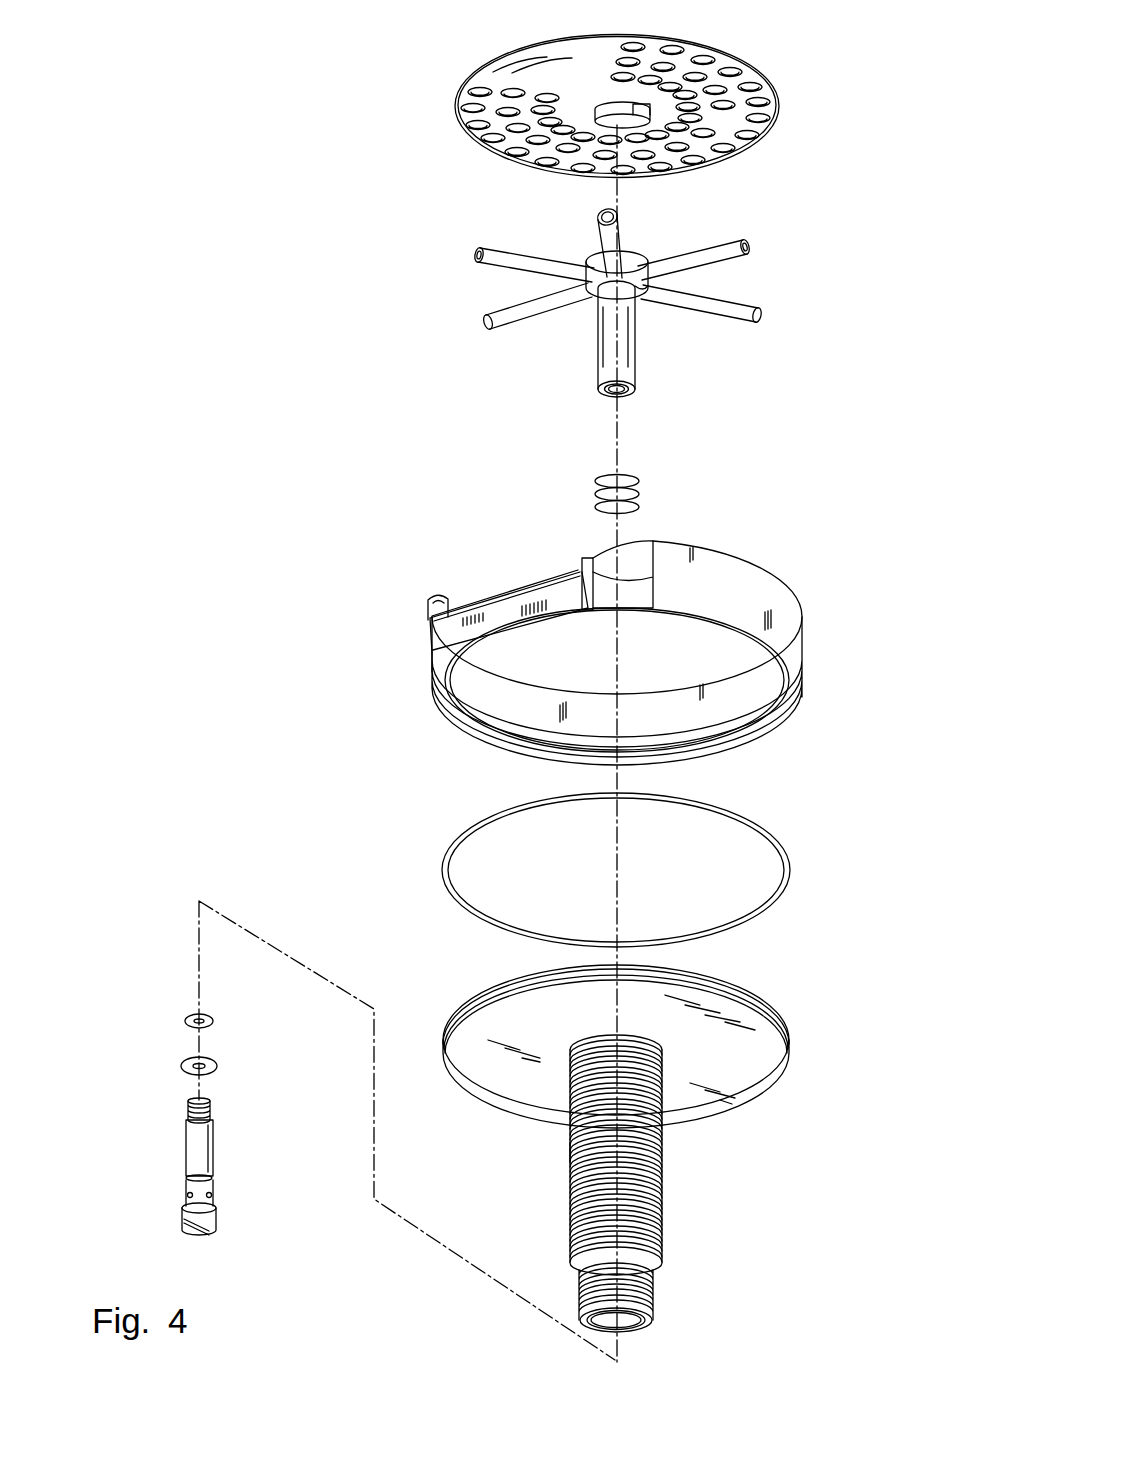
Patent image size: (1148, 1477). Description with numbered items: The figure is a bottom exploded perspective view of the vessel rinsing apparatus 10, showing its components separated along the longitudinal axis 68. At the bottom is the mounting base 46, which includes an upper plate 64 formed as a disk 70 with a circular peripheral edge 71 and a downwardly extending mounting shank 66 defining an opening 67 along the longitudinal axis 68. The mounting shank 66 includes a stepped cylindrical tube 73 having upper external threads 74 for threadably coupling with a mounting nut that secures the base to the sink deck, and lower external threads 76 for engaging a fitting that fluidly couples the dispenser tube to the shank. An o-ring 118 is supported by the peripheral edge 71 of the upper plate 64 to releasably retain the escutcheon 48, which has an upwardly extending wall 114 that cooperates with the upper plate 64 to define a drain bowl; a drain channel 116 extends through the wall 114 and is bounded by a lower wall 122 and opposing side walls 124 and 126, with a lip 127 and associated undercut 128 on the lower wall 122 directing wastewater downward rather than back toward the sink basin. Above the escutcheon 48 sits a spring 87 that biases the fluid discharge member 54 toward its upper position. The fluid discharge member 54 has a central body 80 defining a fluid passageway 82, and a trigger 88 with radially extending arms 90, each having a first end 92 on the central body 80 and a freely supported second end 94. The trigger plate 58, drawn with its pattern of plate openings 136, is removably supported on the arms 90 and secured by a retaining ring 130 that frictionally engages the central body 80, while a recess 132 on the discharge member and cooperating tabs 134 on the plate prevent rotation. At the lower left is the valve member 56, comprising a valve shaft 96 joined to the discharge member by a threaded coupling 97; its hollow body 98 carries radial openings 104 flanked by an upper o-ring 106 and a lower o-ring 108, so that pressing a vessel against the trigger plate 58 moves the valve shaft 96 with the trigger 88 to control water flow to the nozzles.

The vessel rinsing apparatus 10 is at (172, 160).
The mounting base 46 is at (805, 1005).
The escutcheon 48 is at (825, 700).
The fluid discharge member 54 is at (805, 350).
The valve member 56 is at (265, 1190).
The trigger plate 58 is at (785, 46).
The upper plate 64 is at (771, 1053).
The mounting shank 66 is at (614, 1207).
The opening 67 is at (635, 1328).
The longitudinal axis 68 is at (612, 882).
The disk 70 is at (735, 1098).
The circular peripheral edge 71 is at (462, 1010).
The stepped cylindrical tube 73 is at (575, 1190).
The upper external threads 74 is at (570, 1163).
The lower external threads 76 is at (655, 1300).
The central body 80 is at (636, 365).
The fluid passageway 82 is at (605, 395).
The spring 87 is at (640, 480).
The trigger 88 is at (500, 336).
The arms 90 is at (495, 318).
The first end 92 is at (645, 300).
The second end 94 is at (497, 262).
The valve shaft 96 is at (194, 1191).
The threaded coupling 97 is at (187, 1110).
The hollow body 98 is at (187, 1160).
The radial openings 104 is at (186, 1192).
The upper o-ring 106 is at (187, 1018).
The lower o-ring 108 is at (217, 1066).
The upwardly extending wall 114 is at (800, 572).
The drain channel 116 is at (460, 590).
The o-ring 118 is at (792, 866).
The lower wall 122 is at (500, 595).
The side wall 124 is at (428, 612).
The side wall 126 is at (580, 563).
The lip 127 is at (563, 590).
The undercut 128 is at (440, 645).
The retaining ring 130 is at (600, 118).
The recess 132 is at (592, 280).
The tabs 134 is at (678, 128).
The spray holes 136 is at (786, 109).